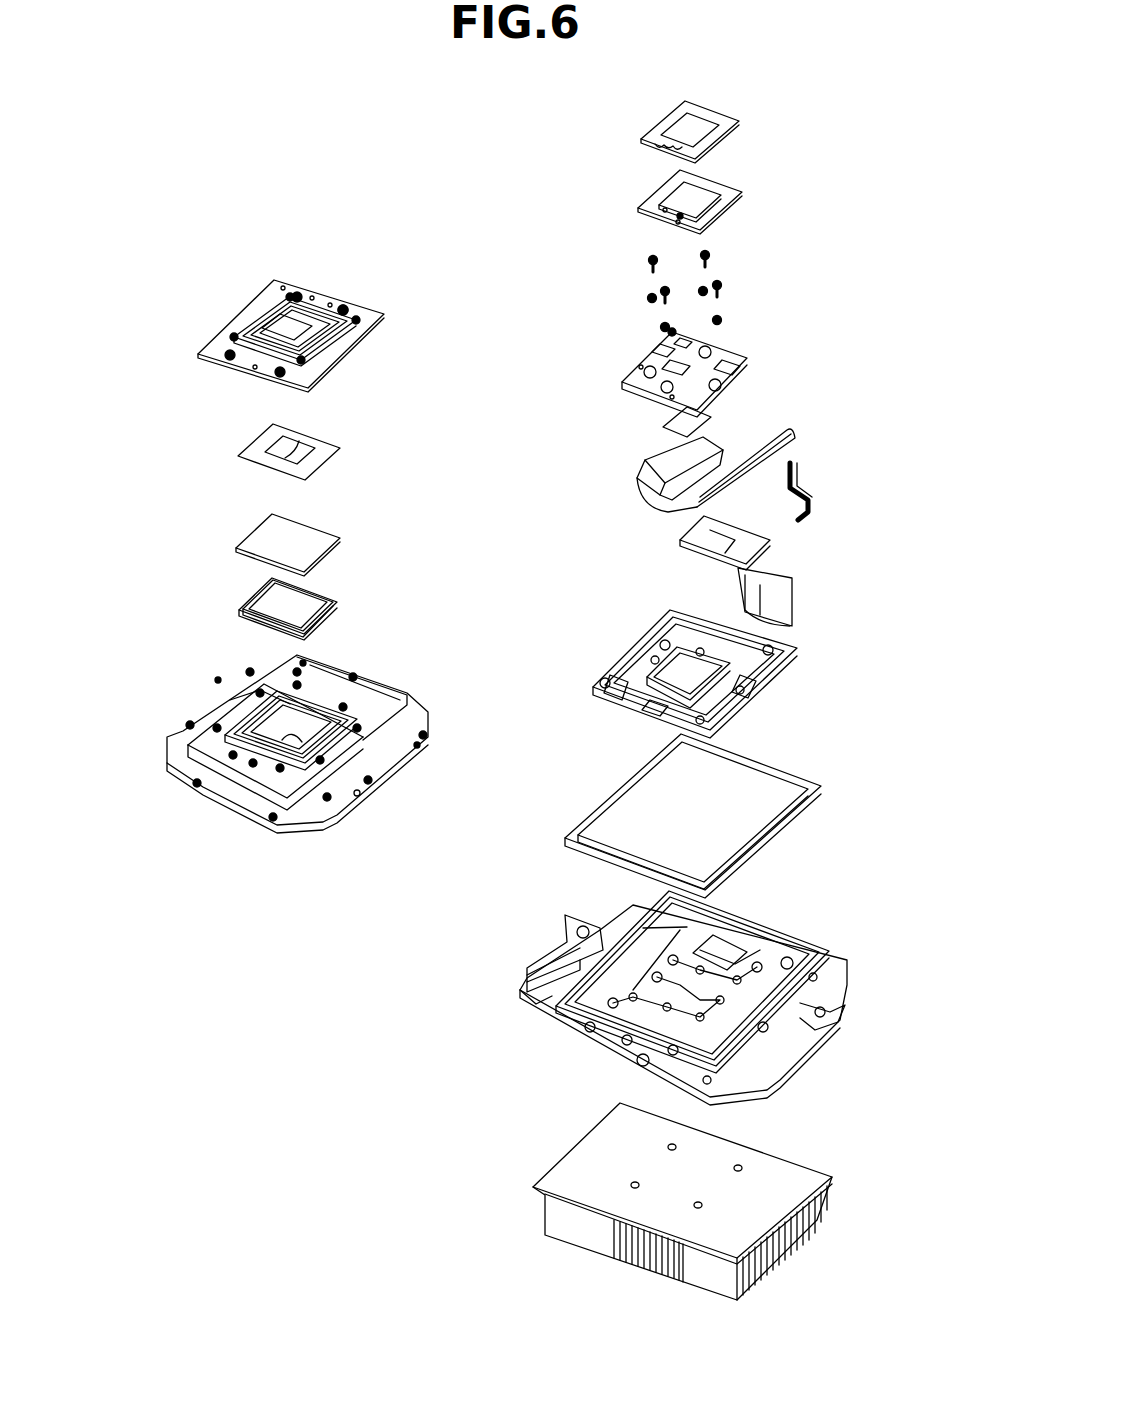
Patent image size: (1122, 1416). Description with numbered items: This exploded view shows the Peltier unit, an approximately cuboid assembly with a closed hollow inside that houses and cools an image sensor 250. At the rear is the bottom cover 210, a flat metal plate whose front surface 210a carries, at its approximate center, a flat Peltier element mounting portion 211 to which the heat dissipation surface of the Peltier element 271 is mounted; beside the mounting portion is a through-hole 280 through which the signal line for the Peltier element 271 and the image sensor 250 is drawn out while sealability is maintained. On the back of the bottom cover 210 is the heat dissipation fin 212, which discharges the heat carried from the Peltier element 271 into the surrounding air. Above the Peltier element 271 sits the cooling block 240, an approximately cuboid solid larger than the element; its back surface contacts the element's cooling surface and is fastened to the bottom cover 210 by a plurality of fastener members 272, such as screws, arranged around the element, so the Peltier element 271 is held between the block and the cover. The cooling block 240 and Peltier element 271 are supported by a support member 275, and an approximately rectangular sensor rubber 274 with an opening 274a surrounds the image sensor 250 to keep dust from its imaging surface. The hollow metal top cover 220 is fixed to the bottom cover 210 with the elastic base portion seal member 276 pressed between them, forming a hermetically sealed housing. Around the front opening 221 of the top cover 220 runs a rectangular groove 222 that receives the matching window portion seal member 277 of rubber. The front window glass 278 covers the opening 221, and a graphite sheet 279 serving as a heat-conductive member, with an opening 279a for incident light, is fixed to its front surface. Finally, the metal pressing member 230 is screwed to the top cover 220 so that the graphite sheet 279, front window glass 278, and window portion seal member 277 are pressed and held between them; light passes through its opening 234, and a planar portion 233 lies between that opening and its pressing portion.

The bottom cover 210 is at (812, 945).
The front surface 210a is at (548, 1027).
The Peltier element mounting portion 211 is at (600, 950).
The heat dissipation fin 212 is at (812, 1170).
The top cover 220 is at (177, 748).
The opening 221 is at (288, 738).
The groove 222 is at (250, 710).
The pressing member 230 is at (207, 345).
The planar portion 233 is at (350, 305).
The opening 234 is at (290, 328).
The cooling block 240 is at (750, 355).
The image sensor 250 is at (740, 187).
The Peltier element 271 is at (700, 442).
The fastener members 272 is at (718, 262).
The sensor rubber 274 is at (712, 102).
The opening 274a is at (680, 128).
The support member 275 is at (800, 645).
The base portion seal member 276 is at (800, 768).
The window portion seal member 277 is at (245, 598).
The front window glass 278 is at (248, 533).
The graphite sheet 279 is at (255, 450).
The opening 279a is at (300, 446).
The through-hole 280 is at (752, 912).